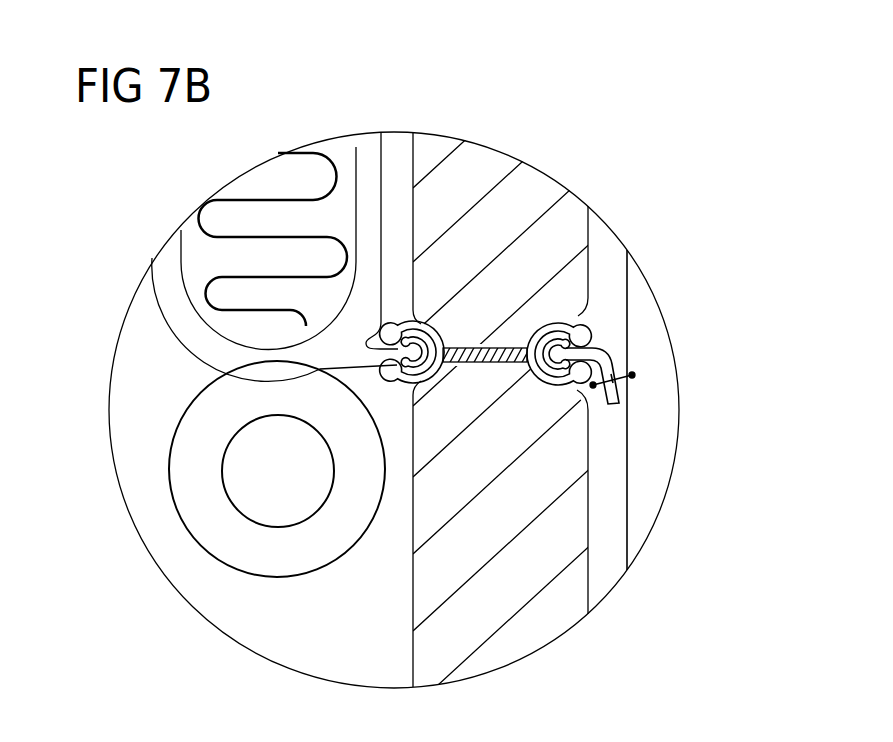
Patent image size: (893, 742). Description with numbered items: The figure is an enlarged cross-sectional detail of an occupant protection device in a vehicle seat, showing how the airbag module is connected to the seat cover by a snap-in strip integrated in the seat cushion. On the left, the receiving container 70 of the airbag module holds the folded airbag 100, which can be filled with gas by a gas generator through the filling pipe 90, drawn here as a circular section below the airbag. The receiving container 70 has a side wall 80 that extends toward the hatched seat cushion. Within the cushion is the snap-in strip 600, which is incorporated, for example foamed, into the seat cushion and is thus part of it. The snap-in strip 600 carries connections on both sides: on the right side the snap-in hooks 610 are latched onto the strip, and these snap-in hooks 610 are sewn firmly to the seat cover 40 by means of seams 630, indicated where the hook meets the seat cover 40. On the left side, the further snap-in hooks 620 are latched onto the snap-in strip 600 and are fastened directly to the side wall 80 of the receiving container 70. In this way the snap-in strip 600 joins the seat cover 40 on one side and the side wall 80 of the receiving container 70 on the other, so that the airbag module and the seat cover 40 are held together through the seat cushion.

The seat cover 40 is at (628, 505).
The receiving container 70 is at (180, 342).
The side wall 80 is at (368, 225).
The filling pipe 90 is at (202, 530).
The airbag 100 is at (210, 242).
The snap-in strip 600 is at (422, 330).
The snap-in hooks 610 is at (578, 323).
The further snap-in hooks 620 is at (407, 377).
The seams 630 is at (634, 386).